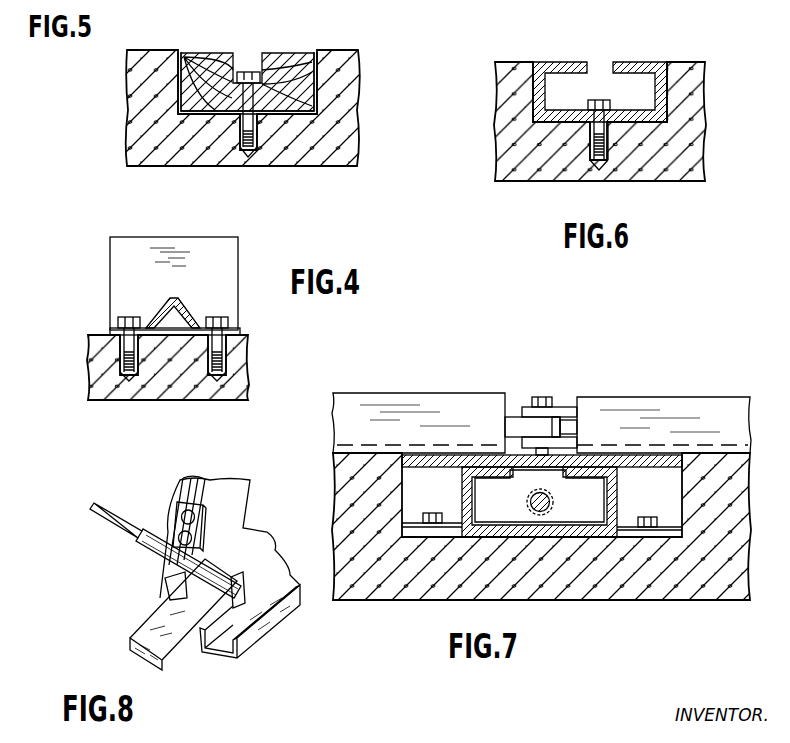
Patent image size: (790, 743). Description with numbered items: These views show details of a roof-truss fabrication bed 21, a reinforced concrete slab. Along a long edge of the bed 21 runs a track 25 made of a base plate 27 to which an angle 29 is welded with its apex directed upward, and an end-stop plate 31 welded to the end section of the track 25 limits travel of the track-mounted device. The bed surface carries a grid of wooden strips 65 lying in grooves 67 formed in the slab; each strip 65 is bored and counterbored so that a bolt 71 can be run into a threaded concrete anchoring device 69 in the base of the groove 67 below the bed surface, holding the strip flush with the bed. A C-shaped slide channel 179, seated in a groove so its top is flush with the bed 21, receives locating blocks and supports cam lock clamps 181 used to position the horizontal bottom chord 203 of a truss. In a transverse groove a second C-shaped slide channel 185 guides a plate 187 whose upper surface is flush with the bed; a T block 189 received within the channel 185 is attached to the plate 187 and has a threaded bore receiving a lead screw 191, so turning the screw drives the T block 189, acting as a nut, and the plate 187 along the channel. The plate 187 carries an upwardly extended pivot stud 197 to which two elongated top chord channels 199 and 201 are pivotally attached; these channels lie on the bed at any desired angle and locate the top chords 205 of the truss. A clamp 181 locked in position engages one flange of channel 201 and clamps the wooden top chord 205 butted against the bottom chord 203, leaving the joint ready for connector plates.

In FIG. 5, the bed or slab 21 is at (360, 125).
In FIG. 6, the bed or slab 21 is at (699, 126).
In FIG. 4, the bed or slab 21 is at (250, 355).
In FIG. 7, the bed or slab 21 is at (743, 505).
In FIG. 5, the wooden strips 65 is at (293, 62).
In FIG. 5, the grooves 67 is at (190, 58).
In FIG. 5, the threaded concrete anchoring device 69 is at (251, 152).
In FIG. 5, the bolts 71 is at (247, 70).
In FIG. 6, the slide channel 179 is at (641, 67).
In FIG. 8, the slide channel 179 is at (183, 487).
In FIG. 4, the plates 31 is at (120, 266).
In FIG. 4, the tracks 25 is at (106, 327).
In FIG. 4, the base plate 27 is at (238, 330).
In FIG. 4, the angle 29 is at (183, 317).
In FIG. 7, the top chord channel 199 is at (433, 405).
In FIG. 7, the top chord channel 201 is at (710, 408).
In FIG. 8, the top chord channel 201 is at (250, 640).
In FIG. 7, the pivot stud 197 is at (546, 395).
In FIG. 7, the plate 187 is at (632, 462).
In FIG. 7, the slide channel 185 is at (612, 506).
In FIG. 7, the T block 189 is at (486, 494).
In FIG. 7, the lead screw 191 is at (554, 501).
In FIG. 8, the bottom chord 203 is at (232, 504).
In FIG. 8, the cam lock clamps 181 is at (178, 522).
In FIG. 8, the top chords 205 is at (150, 633).